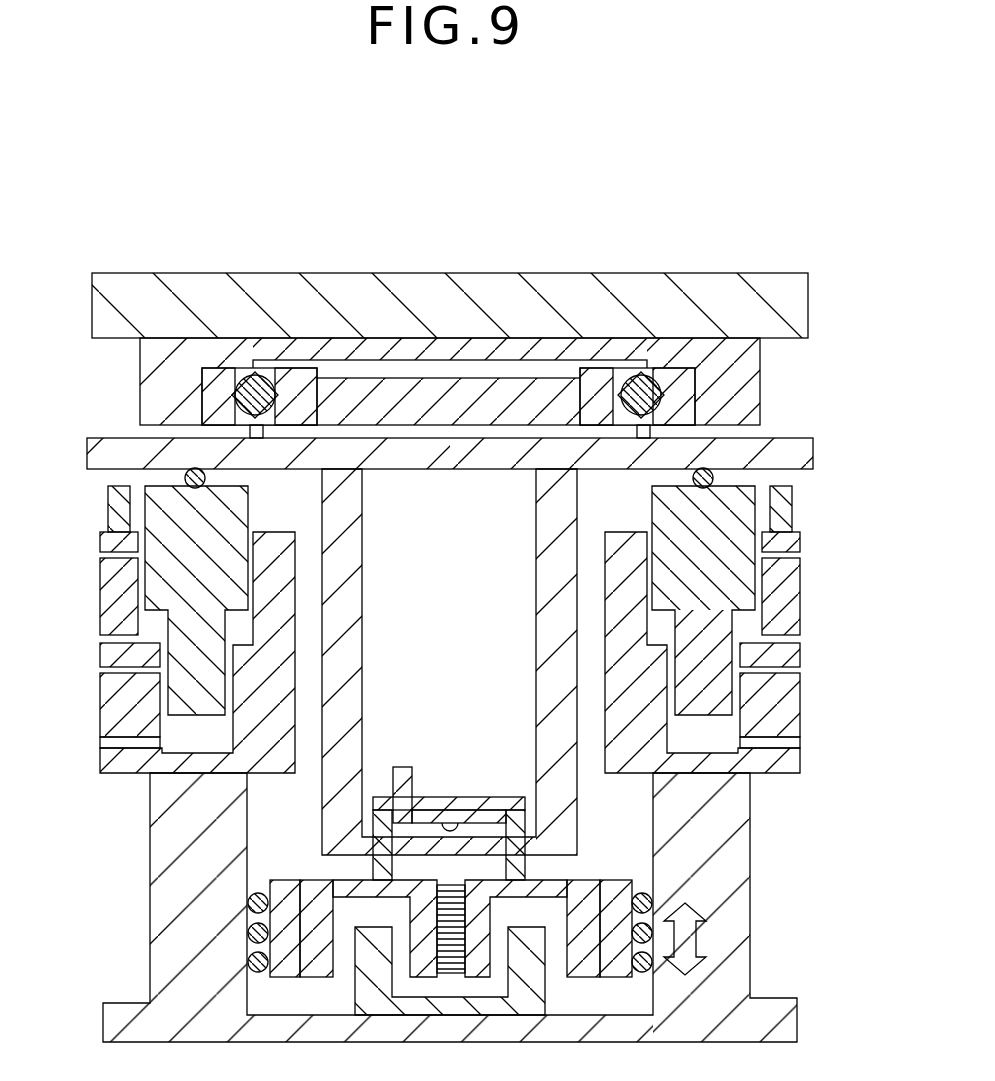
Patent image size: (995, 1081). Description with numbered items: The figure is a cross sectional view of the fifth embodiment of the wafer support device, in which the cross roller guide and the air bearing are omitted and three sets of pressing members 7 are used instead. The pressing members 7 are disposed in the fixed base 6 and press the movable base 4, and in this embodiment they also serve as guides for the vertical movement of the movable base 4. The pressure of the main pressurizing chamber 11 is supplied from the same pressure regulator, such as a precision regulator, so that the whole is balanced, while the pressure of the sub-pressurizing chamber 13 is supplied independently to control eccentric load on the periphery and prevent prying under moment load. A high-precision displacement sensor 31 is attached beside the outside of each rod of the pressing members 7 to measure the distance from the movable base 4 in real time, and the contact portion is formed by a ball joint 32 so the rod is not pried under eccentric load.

The movable base 4 is at (790, 440).
The fixed base 6 is at (715, 858).
The pressing member 7 is at (118, 602).
The main pressurizing chamber 11 is at (192, 733).
The sub-pressurizing chamber 13 is at (152, 622).
The high-precision displacement sensor 31 is at (793, 493).
The ball joint 32 is at (186, 470).